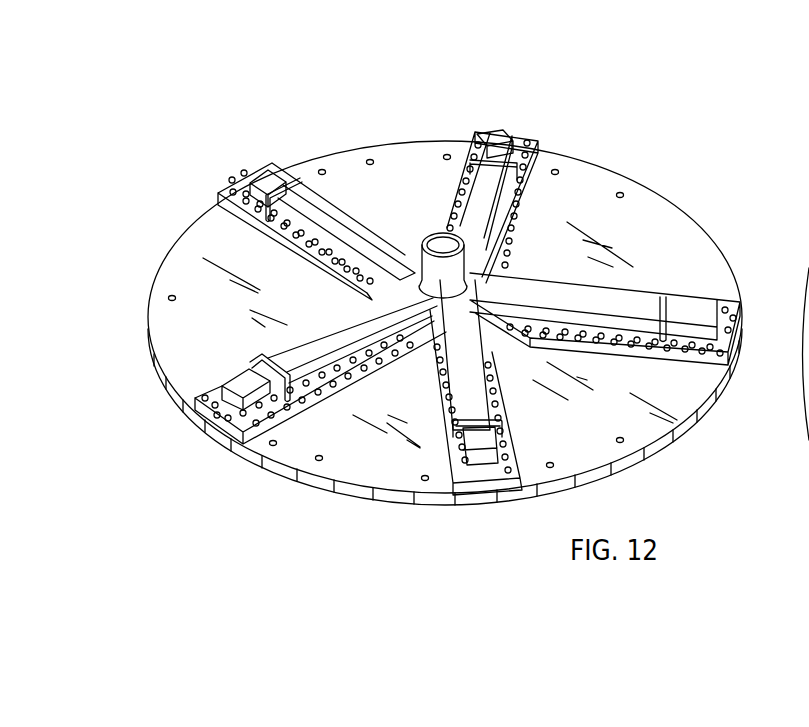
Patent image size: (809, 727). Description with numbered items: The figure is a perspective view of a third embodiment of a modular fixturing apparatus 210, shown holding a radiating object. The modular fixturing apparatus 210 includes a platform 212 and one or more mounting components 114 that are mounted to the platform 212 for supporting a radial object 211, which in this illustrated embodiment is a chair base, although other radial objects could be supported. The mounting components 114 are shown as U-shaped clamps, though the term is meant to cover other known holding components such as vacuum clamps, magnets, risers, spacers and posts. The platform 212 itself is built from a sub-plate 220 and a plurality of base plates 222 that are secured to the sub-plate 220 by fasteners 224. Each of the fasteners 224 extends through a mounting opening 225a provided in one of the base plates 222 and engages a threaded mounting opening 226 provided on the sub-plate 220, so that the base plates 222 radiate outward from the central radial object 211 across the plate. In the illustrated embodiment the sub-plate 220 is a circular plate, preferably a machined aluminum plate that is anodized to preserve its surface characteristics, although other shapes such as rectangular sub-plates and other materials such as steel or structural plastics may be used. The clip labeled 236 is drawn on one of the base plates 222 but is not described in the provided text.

The modular fixturing apparatus 210 is at (612, 147).
The sub-plate 220 is at (695, 218).
The platform 212 is at (637, 167).
The threaded mounting openings 226 is at (623, 193).
The radial object 211 is at (437, 230).
The base plates 222 is at (532, 125).
The mounting opening 225a is at (208, 378).
The clip 236 is at (257, 210).
The fasteners 224 is at (228, 405).
The mounting components 114 is at (520, 420).